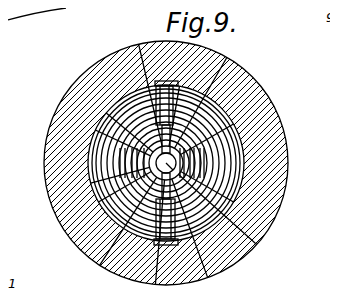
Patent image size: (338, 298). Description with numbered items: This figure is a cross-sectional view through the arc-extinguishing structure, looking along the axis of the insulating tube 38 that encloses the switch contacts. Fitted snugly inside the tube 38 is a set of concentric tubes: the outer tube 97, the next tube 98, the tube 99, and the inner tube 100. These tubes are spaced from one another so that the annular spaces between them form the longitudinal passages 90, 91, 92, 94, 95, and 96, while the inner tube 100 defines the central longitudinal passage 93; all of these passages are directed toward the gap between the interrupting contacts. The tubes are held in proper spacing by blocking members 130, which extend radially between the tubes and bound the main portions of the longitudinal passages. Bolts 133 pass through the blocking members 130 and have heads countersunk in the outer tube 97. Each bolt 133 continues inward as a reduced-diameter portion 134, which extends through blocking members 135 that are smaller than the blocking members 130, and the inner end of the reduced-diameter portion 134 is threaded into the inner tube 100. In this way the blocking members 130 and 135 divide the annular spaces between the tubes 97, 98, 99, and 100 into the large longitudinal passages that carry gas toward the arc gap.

The tube 38 is at (280, 147).
The longitudinal passage 90 is at (85, 112).
The longitudinal passage 91 is at (90, 123).
The longitudinal passage 92 is at (116, 118).
The longitudinal passage 93 is at (200, 180).
The longitudinal passage 94 is at (238, 65).
The longitudinal passage 95 is at (253, 88).
The longitudinal passage 96 is at (262, 112).
The outer tube 97 is at (68, 176).
The tube 98 is at (50, 214).
The tube 99 is at (66, 236).
The inner tube 100 is at (96, 247).
The blocking member 130 is at (133, 46).
The bolt 133 is at (205, 47).
The reduced-diameter portion 134 is at (240, 232).
The blocking member 135 is at (112, 258).